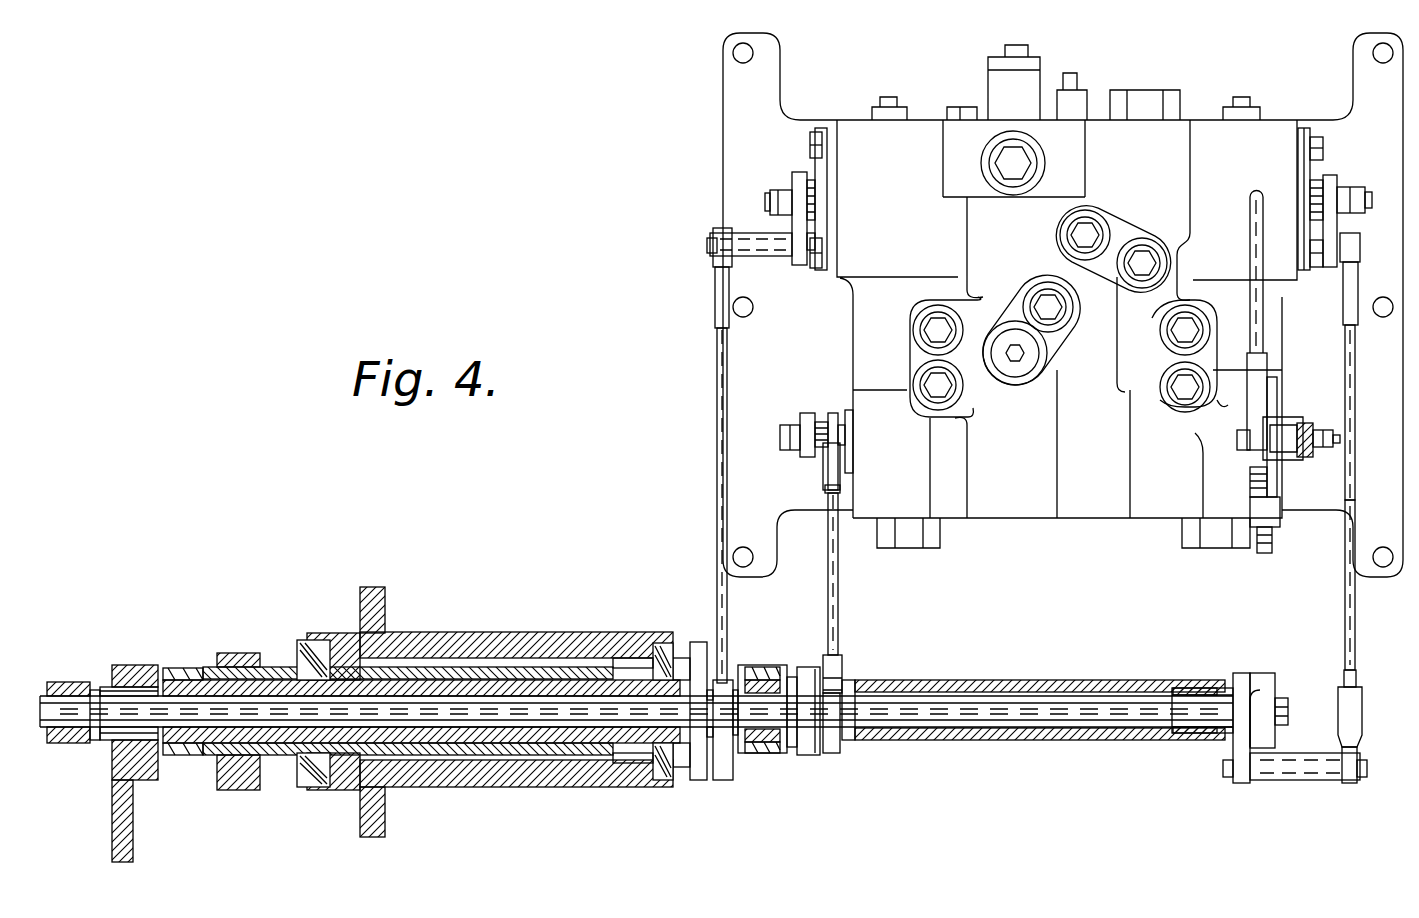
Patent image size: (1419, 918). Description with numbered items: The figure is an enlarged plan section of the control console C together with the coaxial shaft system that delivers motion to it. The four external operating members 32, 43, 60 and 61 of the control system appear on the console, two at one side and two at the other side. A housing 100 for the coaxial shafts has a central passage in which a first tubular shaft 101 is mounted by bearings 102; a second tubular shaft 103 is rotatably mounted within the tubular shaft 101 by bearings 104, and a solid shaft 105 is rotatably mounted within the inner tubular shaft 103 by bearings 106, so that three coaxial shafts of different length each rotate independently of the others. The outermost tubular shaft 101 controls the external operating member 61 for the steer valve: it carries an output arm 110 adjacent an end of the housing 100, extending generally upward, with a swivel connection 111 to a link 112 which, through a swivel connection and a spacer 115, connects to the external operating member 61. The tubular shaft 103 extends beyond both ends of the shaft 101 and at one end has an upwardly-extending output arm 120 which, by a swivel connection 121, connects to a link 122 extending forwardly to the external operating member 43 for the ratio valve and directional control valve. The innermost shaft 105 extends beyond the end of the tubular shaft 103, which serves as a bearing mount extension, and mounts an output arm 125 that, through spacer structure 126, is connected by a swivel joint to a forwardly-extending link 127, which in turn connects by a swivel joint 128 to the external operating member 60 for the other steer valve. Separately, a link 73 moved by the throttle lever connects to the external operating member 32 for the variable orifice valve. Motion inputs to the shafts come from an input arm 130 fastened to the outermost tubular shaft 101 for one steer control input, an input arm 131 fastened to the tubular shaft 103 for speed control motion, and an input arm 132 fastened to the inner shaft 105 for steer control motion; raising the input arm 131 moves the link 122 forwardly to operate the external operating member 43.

The control console C is at (1207, 97).
The external operating member 61 is at (792, 212).
The spacer 115 is at (767, 255).
The link 112 is at (717, 456).
The external operating member 43 is at (803, 420).
The link 122 is at (840, 631).
The link 73 is at (1252, 207).
The external operating member 32 is at (1285, 462).
The external operating member 60 is at (1332, 205).
The swivel joint 128 is at (1343, 250).
The link 127 is at (1343, 632).
The solid shaft 105 is at (495, 714).
The input arm 132 is at (73, 740).
The input arm 131 is at (128, 848).
The bearings 106 is at (127, 690).
The bearings 104 is at (187, 673).
The first tubular shaft 101 is at (553, 668).
The second tubular shaft 103 is at (503, 688).
The input arm 130 is at (250, 790).
The housing 100 is at (442, 640).
The bearings 102 is at (343, 642).
The output arm 110 is at (698, 781).
The swivel connection 111 is at (713, 780).
The output arm 120 is at (808, 732).
The swivel connection 121 is at (816, 735).
The output arm 125 is at (1242, 783).
The spacer structure 126 is at (1310, 775).